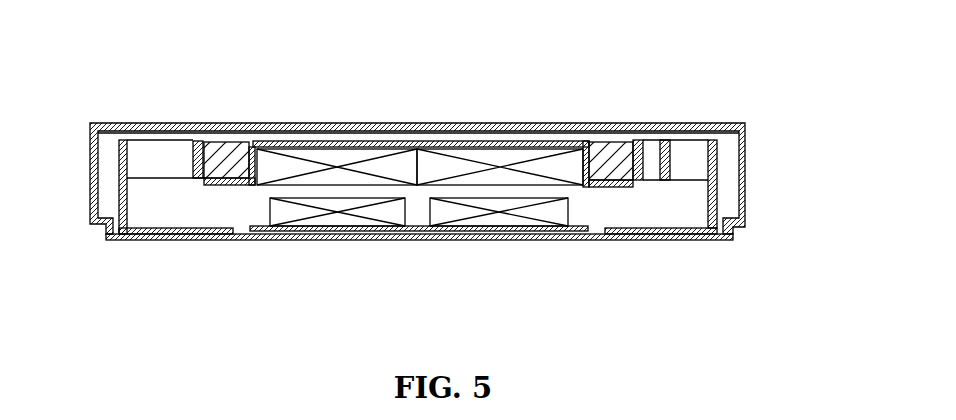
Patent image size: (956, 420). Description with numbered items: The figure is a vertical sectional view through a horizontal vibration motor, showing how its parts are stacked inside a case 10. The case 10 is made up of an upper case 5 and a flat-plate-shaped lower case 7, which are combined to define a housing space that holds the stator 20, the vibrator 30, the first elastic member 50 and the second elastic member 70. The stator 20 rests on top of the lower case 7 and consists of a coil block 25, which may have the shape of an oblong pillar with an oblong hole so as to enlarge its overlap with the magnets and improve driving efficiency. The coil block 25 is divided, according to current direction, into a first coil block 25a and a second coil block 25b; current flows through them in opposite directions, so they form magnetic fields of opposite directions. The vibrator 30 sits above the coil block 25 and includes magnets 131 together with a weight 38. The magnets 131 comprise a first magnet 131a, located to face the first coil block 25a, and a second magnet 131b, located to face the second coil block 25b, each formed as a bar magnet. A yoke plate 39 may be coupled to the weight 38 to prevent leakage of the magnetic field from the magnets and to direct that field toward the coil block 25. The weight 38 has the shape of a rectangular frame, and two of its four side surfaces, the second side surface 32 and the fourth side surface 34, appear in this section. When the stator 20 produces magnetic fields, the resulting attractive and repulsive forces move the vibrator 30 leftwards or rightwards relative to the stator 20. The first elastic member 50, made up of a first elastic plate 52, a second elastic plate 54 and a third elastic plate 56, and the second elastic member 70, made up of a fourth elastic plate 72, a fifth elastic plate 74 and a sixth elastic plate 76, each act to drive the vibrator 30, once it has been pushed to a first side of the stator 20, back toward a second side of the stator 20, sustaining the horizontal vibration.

The upper case 5 is at (743, 203).
The lower case 7 is at (728, 238).
The case 10 is at (462, 185).
The stator 20 is at (272, 231).
The coil block 25 is at (419, 263).
The first coil block 25a is at (384, 217).
The second coil block 25b is at (499, 245).
The vibrator 30 is at (418, 114).
The second side surface 32 is at (205, 140).
The fourth side surface 34 is at (629, 150).
The weight 38 is at (603, 134).
The yoke plate 39 is at (300, 141).
The first elastic member 50 is at (236, 134).
The first elastic plate 52 is at (122, 200).
The second elastic plate 54 is at (150, 166).
The third elastic plate 56 is at (192, 172).
The second elastic member 70 is at (717, 152).
The fourth elastic plate 72 is at (714, 177).
The fifth elastic plate 74 is at (720, 162).
The sixth elastic plate 76 is at (639, 148).
The magnets 131 is at (420, 113).
The first magnet 131a is at (368, 155).
The second magnet 131b is at (458, 155).